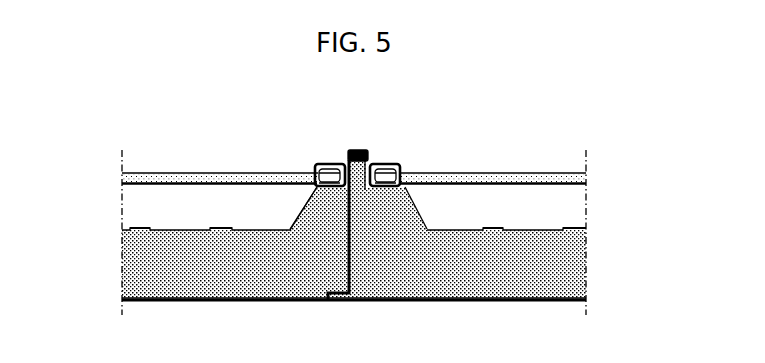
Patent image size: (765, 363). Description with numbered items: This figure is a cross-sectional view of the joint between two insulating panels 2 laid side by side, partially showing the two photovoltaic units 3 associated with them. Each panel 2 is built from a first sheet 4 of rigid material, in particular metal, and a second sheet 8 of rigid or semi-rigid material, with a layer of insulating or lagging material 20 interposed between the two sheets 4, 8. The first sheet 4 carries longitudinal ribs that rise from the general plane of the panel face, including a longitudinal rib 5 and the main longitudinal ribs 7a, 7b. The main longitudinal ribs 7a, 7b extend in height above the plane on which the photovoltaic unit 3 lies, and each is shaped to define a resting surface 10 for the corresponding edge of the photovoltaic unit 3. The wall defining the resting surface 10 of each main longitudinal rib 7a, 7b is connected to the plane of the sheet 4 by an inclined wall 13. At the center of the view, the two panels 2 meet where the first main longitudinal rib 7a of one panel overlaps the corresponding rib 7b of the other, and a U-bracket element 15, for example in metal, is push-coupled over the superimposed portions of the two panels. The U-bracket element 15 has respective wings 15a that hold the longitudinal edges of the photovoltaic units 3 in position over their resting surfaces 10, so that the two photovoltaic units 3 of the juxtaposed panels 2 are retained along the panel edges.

The panel 2 is at (268, 304).
The photovoltaic unit 3 is at (211, 172).
The first sheet 4 is at (134, 219).
The longitudinal rib 5 is at (221, 227).
The first main longitudinal rib 7a is at (292, 196).
The main longitudinal rib 7b is at (432, 199).
The second sheet 8 is at (158, 305).
The resting surface 10 is at (318, 178).
The inclined wall 13 is at (291, 222).
The U-bracket element 15 is at (358, 147).
The wing 15a is at (341, 162).
The insulating layer 20 is at (140, 258).